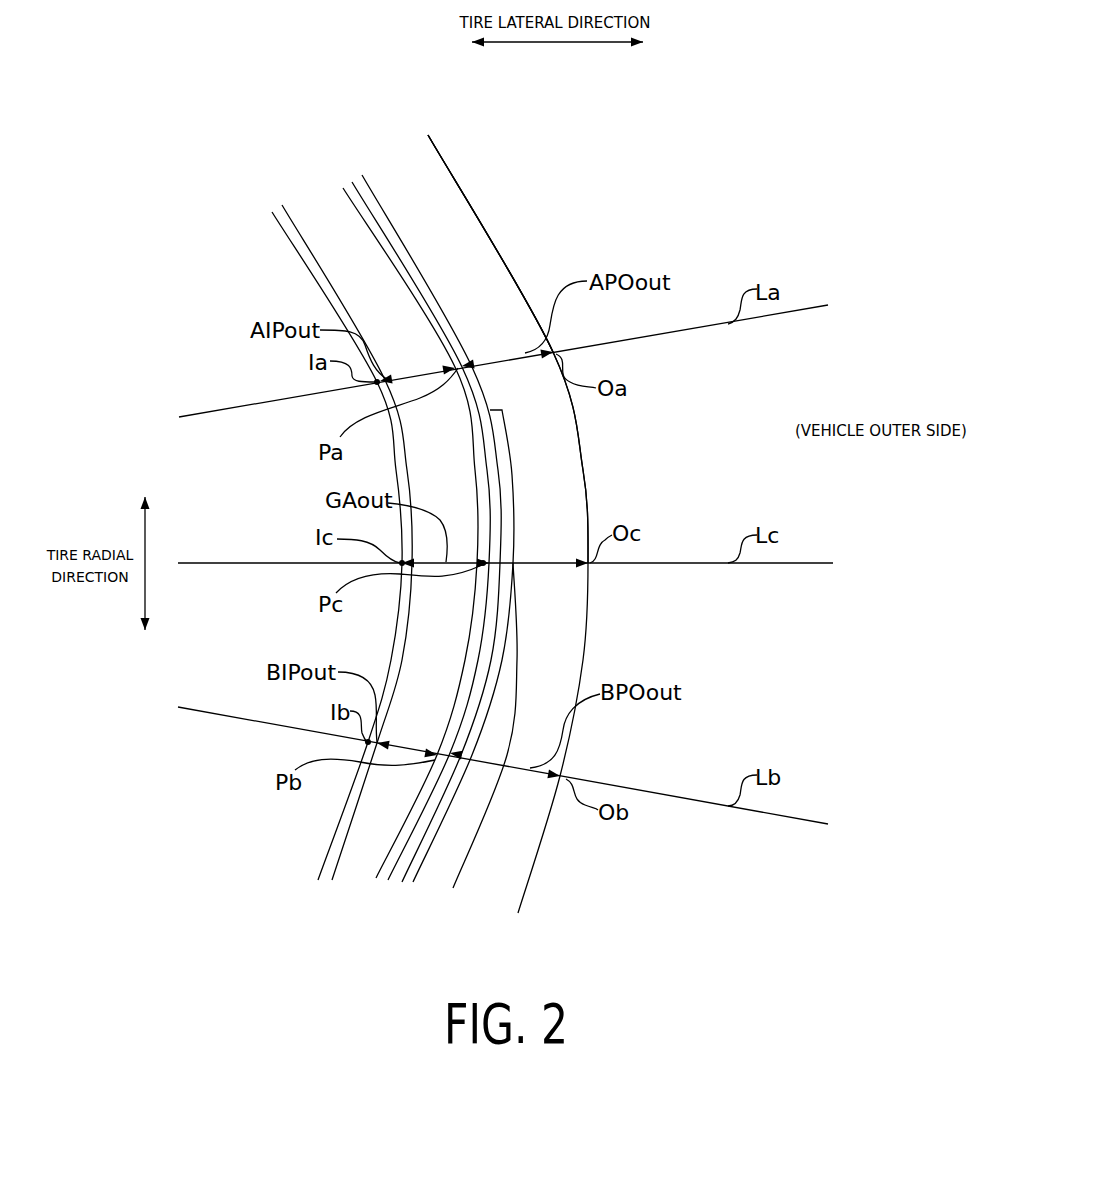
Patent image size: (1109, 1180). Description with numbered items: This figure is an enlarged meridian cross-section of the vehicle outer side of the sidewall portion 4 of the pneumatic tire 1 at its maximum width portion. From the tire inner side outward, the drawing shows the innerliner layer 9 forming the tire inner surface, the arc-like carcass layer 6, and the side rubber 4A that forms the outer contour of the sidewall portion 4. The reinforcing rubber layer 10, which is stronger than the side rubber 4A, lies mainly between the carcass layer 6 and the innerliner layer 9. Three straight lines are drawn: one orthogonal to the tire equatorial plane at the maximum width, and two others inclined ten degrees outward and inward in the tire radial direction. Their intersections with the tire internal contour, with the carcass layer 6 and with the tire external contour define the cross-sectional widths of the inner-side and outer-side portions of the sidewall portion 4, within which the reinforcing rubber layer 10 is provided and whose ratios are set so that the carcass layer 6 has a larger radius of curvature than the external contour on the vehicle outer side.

The pneumatic tire 1 is at (565, 150).
The sidewall portion 4 is at (584, 473).
The side rubber 4A is at (517, 312).
The carcass layer 6 is at (427, 248).
The innerliner layer 9 is at (298, 236).
The reinforcing rubber layer 10 is at (387, 805).